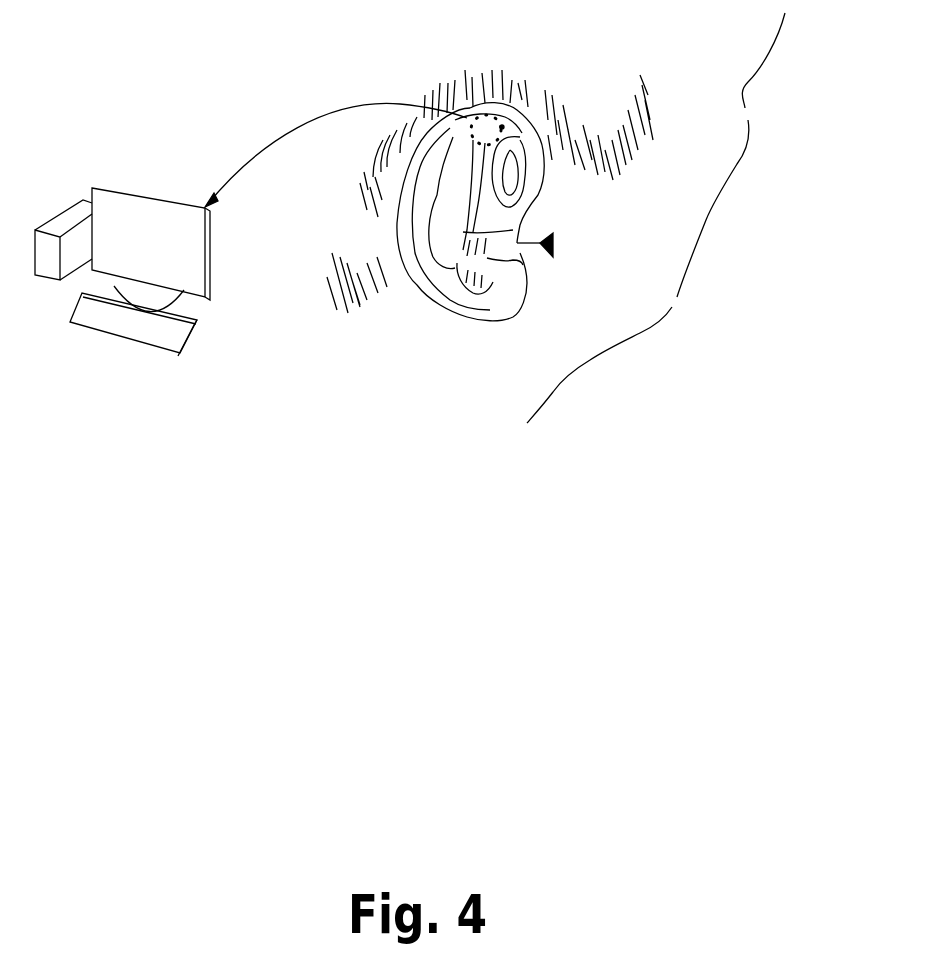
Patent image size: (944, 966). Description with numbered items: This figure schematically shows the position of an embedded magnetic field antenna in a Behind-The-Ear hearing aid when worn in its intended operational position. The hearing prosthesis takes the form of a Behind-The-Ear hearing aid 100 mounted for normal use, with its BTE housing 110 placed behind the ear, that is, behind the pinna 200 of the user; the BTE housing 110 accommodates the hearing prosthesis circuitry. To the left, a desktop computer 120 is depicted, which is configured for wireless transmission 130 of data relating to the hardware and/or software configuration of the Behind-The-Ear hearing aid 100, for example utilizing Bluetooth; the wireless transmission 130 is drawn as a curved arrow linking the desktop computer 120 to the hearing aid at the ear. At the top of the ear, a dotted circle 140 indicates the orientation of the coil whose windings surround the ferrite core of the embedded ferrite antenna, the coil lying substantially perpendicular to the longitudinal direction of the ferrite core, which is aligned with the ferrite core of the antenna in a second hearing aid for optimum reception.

The Behind-The-Ear hearing aid 100 is at (458, 78).
The BTE housing 110 is at (495, 104).
The desktop computer 120 is at (136, 163).
The wireless transmission 130 is at (350, 107).
The dotted circle 140 is at (503, 127).
The pinna 200 is at (437, 297).